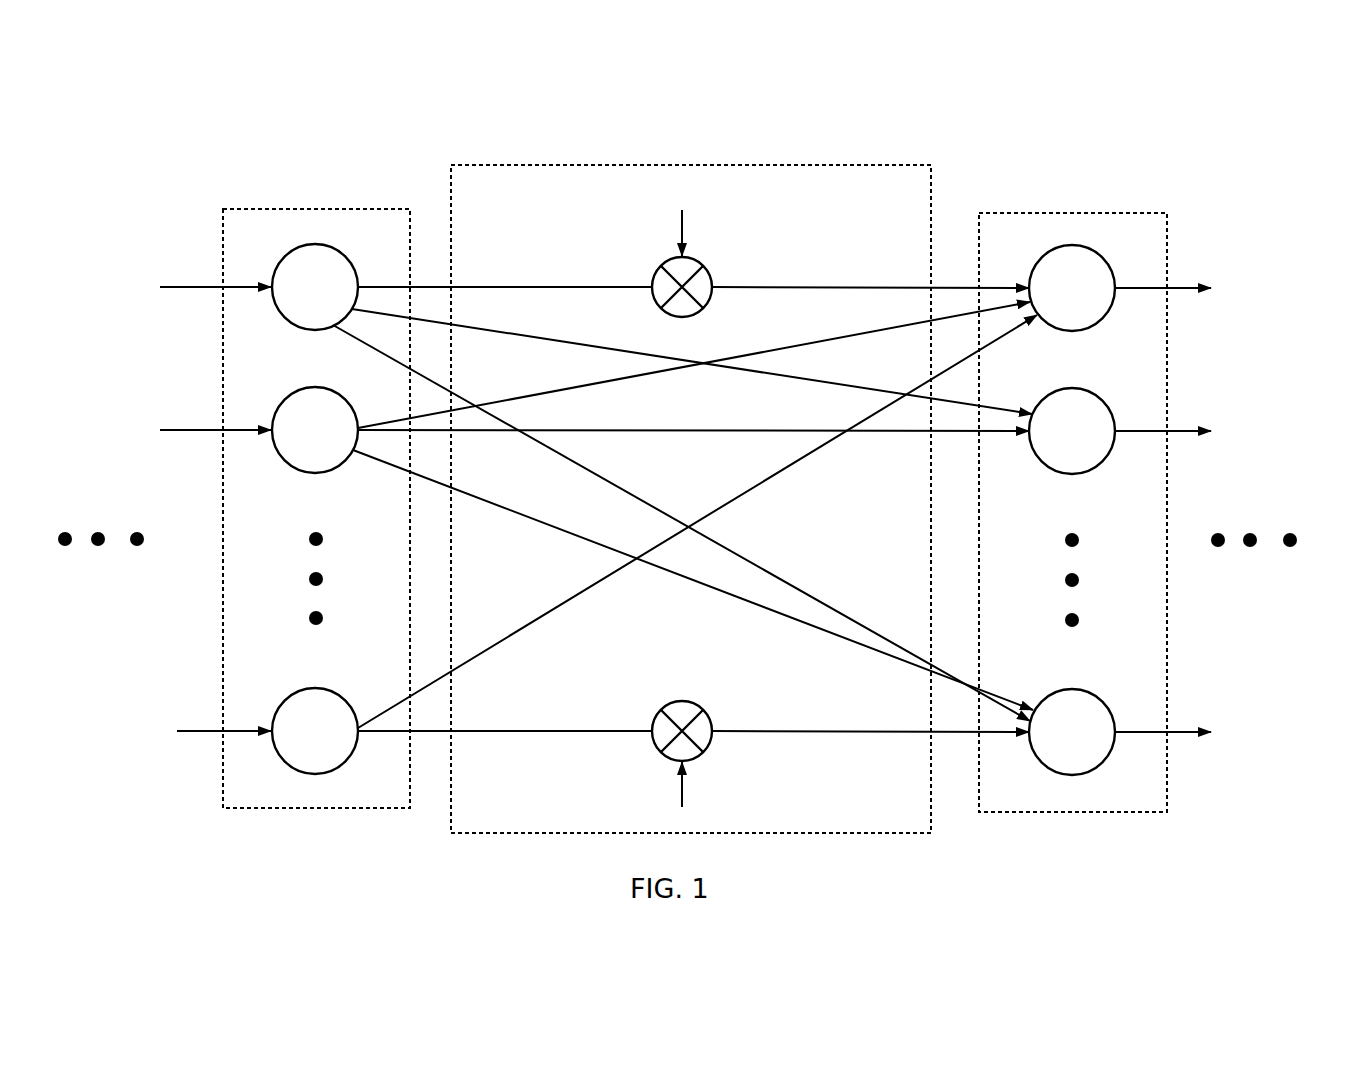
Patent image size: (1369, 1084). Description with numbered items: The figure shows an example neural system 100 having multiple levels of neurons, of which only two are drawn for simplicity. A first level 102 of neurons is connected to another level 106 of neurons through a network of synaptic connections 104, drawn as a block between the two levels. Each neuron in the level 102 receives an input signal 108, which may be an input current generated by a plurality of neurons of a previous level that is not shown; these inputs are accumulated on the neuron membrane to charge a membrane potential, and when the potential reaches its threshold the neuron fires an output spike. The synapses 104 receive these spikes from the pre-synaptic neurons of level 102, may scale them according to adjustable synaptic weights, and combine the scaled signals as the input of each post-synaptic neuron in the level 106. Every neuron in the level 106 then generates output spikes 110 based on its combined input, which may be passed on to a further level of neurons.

The neural system 100 is at (168, 157).
The level of neurons 102 is at (270, 209).
The network of synaptic connections 104 is at (866, 165).
The level of neurons 106 is at (1059, 213).
The input signal 108 is at (134, 709).
The output spikes 110 is at (1255, 252).